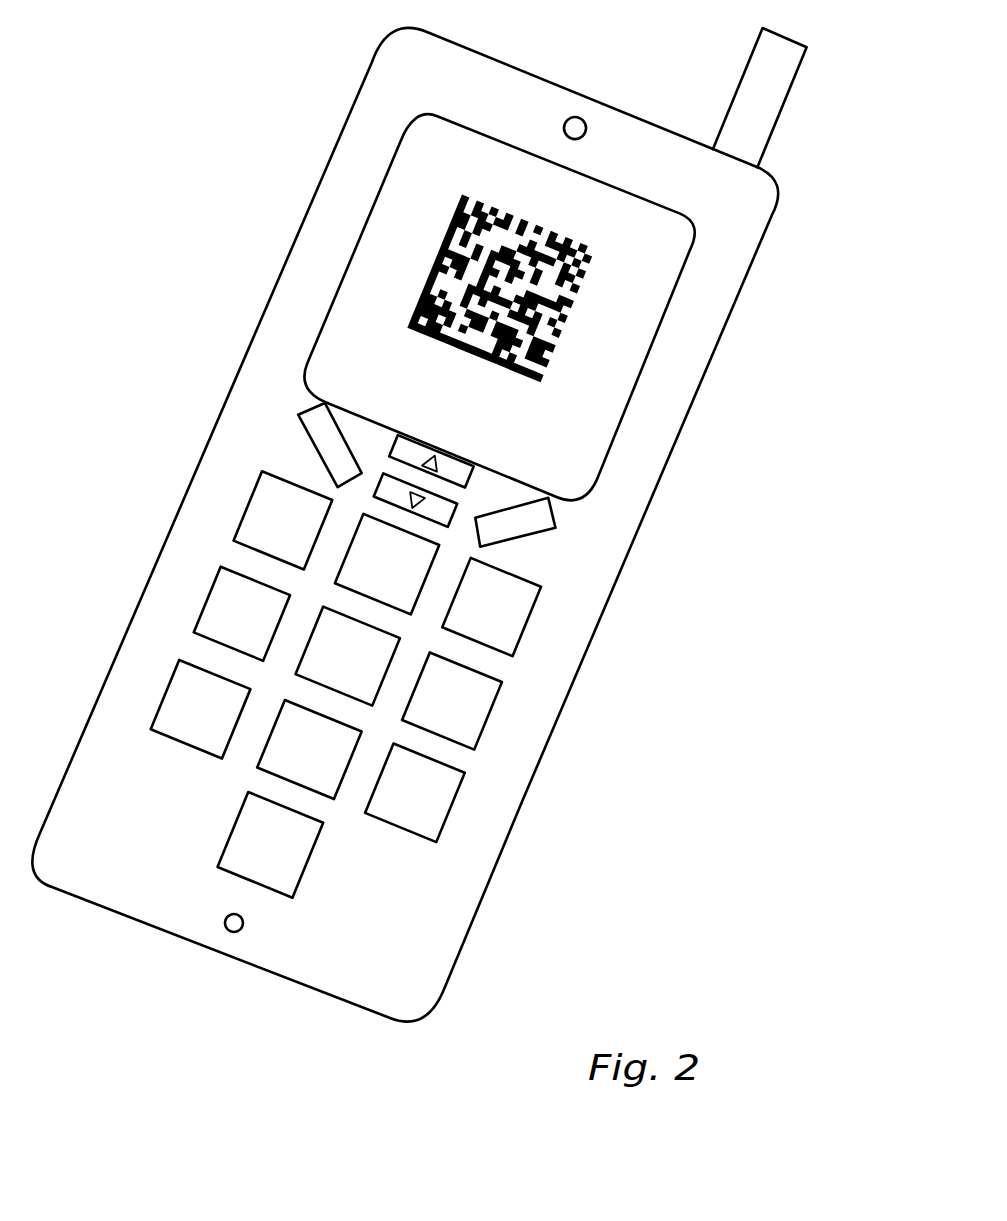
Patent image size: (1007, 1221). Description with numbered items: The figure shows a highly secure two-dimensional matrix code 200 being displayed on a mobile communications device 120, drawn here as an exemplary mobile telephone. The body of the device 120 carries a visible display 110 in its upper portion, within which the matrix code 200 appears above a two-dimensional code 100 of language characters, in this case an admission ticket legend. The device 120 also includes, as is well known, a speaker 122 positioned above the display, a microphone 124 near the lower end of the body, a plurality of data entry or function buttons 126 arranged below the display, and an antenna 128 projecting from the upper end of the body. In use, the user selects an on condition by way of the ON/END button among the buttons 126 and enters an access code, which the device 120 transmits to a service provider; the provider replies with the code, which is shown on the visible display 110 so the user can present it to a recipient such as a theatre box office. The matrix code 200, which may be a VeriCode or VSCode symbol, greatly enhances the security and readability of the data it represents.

The two-dimensional code 100 is at (535, 466).
The mobile communications visible display 110 is at (647, 362).
The mobile communications device 120 is at (114, 963).
The speaker 122 is at (580, 117).
The microphone 124 is at (237, 932).
The data entry or function buttons 126 is at (300, 398).
The antenna 128 is at (787, 103).
The highly secure two-dimensional matrix code 200 is at (590, 268).